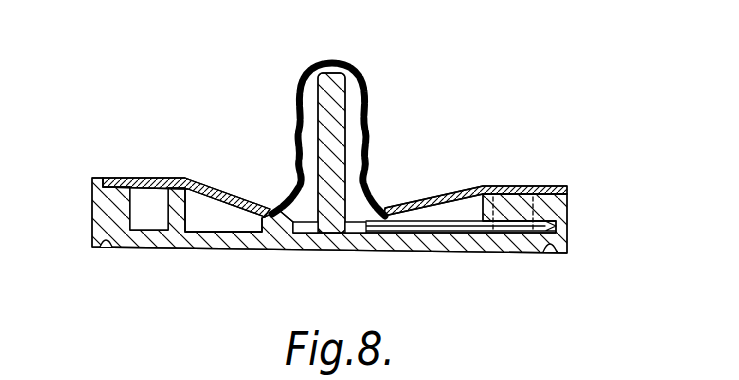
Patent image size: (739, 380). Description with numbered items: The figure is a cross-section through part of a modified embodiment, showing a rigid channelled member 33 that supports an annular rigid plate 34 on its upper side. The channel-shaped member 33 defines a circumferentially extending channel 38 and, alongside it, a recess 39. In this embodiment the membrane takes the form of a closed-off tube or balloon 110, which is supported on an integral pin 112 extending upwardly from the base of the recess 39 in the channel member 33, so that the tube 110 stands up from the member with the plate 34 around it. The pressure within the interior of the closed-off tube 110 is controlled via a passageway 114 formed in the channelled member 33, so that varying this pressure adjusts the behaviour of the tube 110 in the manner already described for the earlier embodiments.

The rigid channelled member 33 is at (100, 223).
The annular rigid plate 34 is at (133, 178).
The circumferentially extending channel 38 is at (137, 204).
The recess 39 is at (227, 215).
The closed-off tube 110 is at (303, 104).
The integral pin 112 is at (347, 64).
The passageway 114 is at (510, 227).